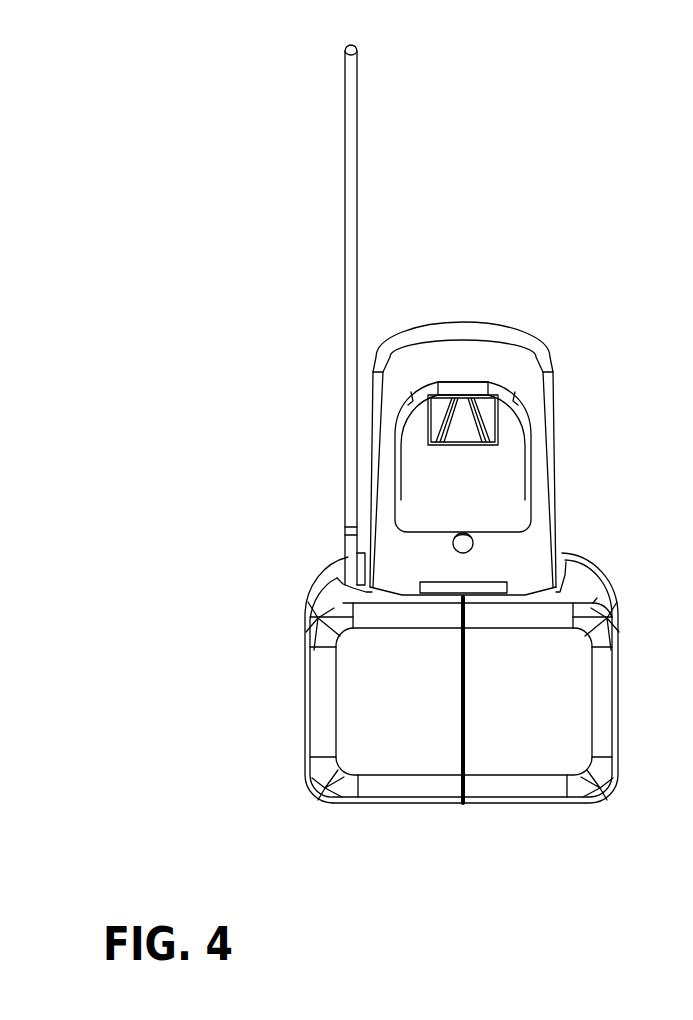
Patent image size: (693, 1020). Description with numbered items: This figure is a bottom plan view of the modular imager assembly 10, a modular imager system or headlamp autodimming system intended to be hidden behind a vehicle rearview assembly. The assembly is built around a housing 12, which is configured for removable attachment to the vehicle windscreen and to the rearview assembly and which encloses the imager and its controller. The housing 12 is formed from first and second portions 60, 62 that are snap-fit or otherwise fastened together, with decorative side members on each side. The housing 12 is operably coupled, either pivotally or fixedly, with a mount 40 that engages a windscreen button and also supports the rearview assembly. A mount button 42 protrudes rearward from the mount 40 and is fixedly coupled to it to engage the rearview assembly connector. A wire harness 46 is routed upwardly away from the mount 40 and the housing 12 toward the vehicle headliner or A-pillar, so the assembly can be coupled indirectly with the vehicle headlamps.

The modular imager assembly 10 is at (465, 485).
The housing 12 is at (465, 728).
The mount 40 is at (492, 437).
The mount button 42 is at (498, 471).
The wire harness 46 is at (351, 182).
The first portion 60 is at (363, 708).
The second portion 62 is at (568, 699).